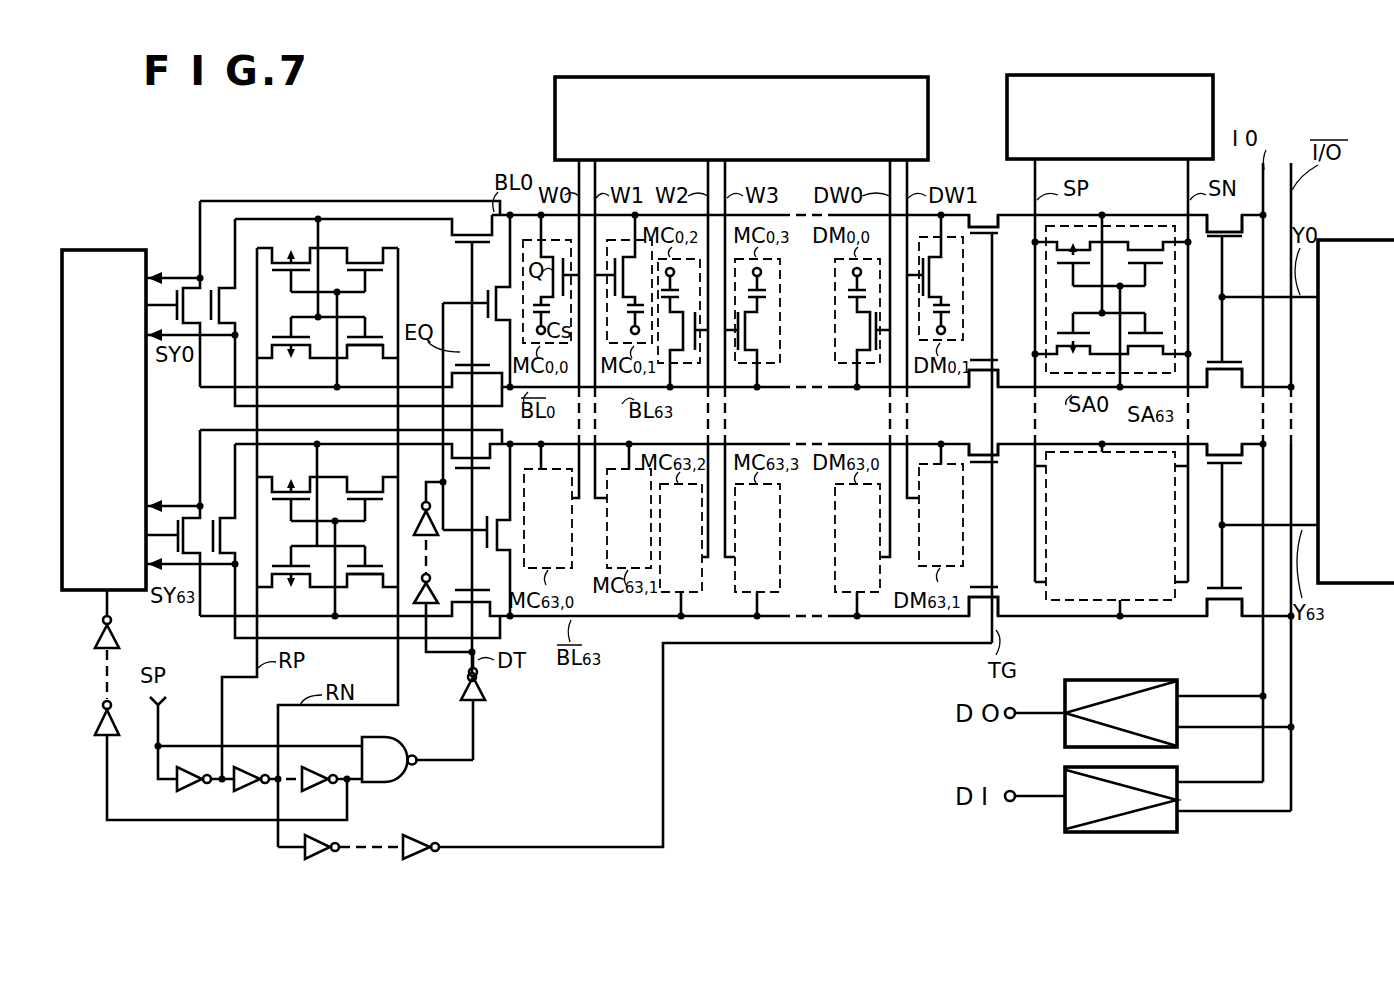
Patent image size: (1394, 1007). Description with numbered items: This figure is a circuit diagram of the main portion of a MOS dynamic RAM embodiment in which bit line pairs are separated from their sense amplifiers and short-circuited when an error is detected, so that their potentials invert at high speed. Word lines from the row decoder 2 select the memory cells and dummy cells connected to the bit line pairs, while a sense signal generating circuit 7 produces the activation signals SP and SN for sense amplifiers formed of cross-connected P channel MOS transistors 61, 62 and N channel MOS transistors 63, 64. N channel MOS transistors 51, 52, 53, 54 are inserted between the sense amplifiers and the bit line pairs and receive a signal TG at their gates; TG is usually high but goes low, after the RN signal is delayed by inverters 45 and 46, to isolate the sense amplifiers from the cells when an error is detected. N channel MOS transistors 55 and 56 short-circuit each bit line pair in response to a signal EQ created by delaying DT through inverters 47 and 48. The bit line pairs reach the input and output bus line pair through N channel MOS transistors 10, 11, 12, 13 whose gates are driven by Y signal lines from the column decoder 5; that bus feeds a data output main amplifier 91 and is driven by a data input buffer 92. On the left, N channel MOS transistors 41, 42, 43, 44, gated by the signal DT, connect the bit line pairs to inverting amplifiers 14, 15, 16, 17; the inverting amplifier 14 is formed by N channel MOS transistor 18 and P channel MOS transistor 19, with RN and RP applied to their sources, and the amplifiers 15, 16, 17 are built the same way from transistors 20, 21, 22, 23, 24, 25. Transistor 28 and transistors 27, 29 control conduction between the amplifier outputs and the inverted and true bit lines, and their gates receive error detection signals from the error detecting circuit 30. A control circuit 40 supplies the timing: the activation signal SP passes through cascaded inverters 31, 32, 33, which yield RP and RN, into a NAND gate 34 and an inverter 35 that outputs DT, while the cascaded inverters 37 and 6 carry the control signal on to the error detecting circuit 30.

The row decoder 2 is at (898, 77).
The column decoder 5 is at (1360, 590).
The inverter 6 is at (100, 720).
The sense signal generating circuit 7 is at (1200, 75).
The N channel MOS transistor 10 is at (1222, 240).
The N channel MOS transistor 11 is at (1222, 372).
The N channel MOS transistor 12 is at (1222, 466).
The N channel MOS transistor 13 is at (1222, 610).
The inverting amplifier 14 is at (326, 305).
The inverting amplifier 15 is at (362, 328).
The inverting amplifier 16 is at (326, 533).
The inverting amplifier 17 is at (360, 554).
The N channel MOS transistor 18 is at (366, 270).
The P channel MOS transistor 19 is at (262, 272).
The transistor 20 is at (350, 352).
The transistor 21 is at (285, 352).
The transistor 22 is at (375, 490).
The transistor 23 is at (270, 505).
The transistor 24 is at (350, 590).
The transistor 25 is at (286, 590).
The transistor 27 is at (176, 277).
The N channel MOS transistor 28 is at (215, 532).
The transistor 29 is at (176, 505).
The error detecting circuit 30 is at (103, 249).
The inverter 31 is at (192, 792).
The inverter 32 is at (248, 792).
The inverter 33 is at (316, 792).
The NAND gate 34 is at (380, 783).
The inverter 35 is at (495, 690).
The inverter 37 is at (117, 640).
The control circuit 40 is at (325, 777).
The N channel MOS transistor 41 is at (480, 245).
The N channel MOS transistor 42 is at (472, 367).
The N channel MOS transistor 43 is at (480, 470).
The N channel MOS transistor 44 is at (480, 592).
The inverter 45 is at (438, 571).
The inverter 46 is at (430, 536).
The inverter 47 is at (322, 865).
The inverter 48 is at (420, 865).
The N channel MOS transistor 51 is at (992, 225).
The N channel MOS transistor 52 is at (992, 362).
The N channel MOS transistor 53 is at (992, 466).
The N channel MOS transistor 54 is at (1005, 560).
The N channel MOS transistor 55 is at (494, 292).
The N channel MOS transistor 56 is at (492, 518).
The P channel MOS transistor 61 is at (1073, 272).
The P channel MOS transistor 62 is at (1135, 262).
The N channel MOS transistor 63 is at (1073, 336).
The N channel MOS transistor 64 is at (1145, 328).
The data output main amplifier 91 is at (1100, 680).
The data input buffer 92 is at (1130, 842).